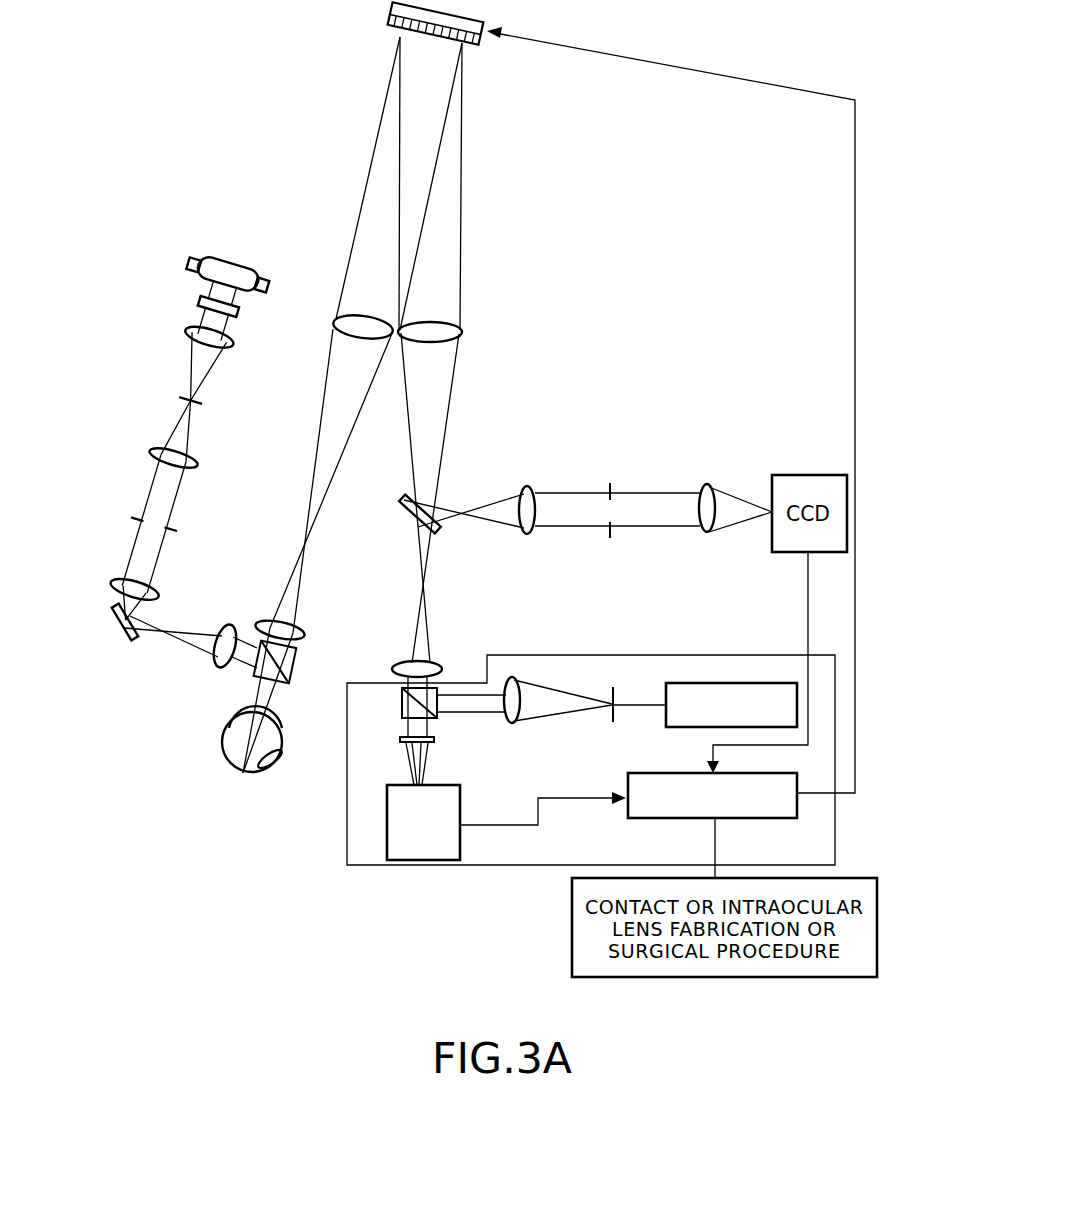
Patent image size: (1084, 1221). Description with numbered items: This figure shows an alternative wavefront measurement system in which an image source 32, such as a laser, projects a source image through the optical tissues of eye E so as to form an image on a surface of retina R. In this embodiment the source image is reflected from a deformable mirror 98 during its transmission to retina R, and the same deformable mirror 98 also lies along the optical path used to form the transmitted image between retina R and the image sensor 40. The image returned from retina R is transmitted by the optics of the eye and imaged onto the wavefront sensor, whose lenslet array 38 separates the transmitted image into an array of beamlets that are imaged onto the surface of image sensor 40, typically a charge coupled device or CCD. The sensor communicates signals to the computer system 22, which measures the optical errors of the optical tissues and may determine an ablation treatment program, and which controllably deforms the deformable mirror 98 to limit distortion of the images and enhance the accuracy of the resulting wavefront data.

The deformable mirror 98 is at (391, 31).
The image source 32 is at (736, 683).
The lenslet array 38 is at (436, 739).
The image sensor 40 is at (459, 788).
The computer system 22 is at (798, 811).
The eye E is at (212, 754).
The retina R is at (280, 755).